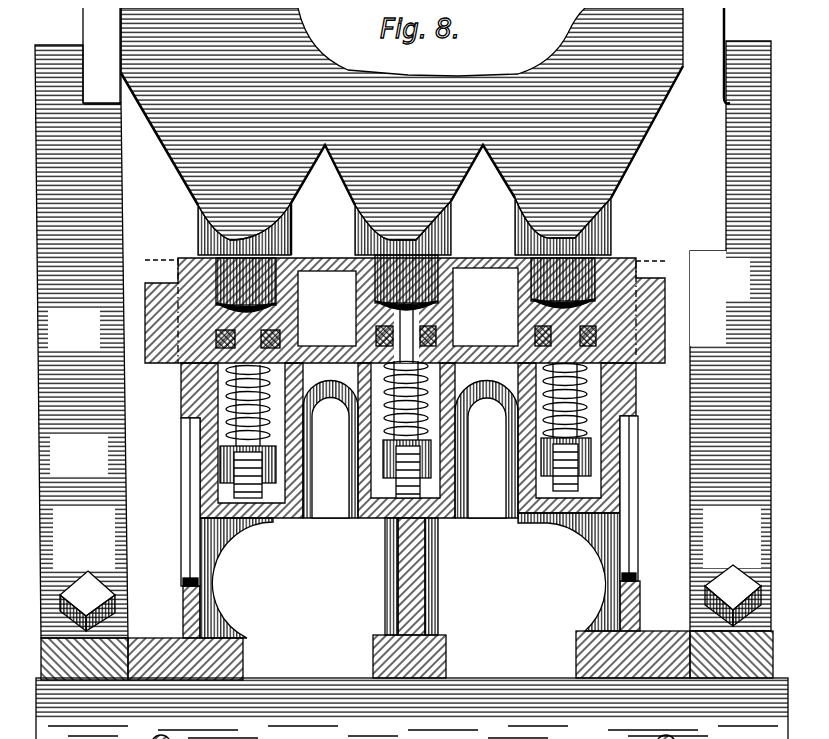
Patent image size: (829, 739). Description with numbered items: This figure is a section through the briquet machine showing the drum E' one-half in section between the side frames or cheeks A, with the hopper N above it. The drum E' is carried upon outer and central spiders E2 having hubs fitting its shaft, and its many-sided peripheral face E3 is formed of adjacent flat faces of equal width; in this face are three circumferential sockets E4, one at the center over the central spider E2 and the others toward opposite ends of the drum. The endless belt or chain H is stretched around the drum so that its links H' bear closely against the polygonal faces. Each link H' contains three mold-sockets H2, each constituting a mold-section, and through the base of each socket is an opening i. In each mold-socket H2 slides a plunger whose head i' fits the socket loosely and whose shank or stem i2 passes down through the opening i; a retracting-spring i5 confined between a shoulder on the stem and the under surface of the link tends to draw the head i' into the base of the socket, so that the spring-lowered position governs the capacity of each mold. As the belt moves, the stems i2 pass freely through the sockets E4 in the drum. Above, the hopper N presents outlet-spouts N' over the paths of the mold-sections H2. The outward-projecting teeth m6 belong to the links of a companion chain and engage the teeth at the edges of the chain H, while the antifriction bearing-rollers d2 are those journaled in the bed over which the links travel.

The side frames or cheeks A is at (403, 323).
The hopper N is at (402, 131).
The outlet-spouts N' is at (402, 160).
The endless belt or chain H is at (362, 310).
The links H' is at (485, 283).
The mold-sockets H2 is at (280, 283).
The openings i is at (406, 339).
The plunger head i' is at (405, 300).
The plunger shank or stem i2 is at (233, 373).
The retracting-spring i5 is at (533, 407).
The outward-projecting teeth m6 is at (137, 258).
The drum E' is at (407, 550).
The outer and central spiders E2 is at (175, 565).
The many-sided peripheral face E3 is at (718, 275).
The circumferential sockets E4 is at (270, 500).
The antifriction bearing-rollers d2 is at (320, 738).